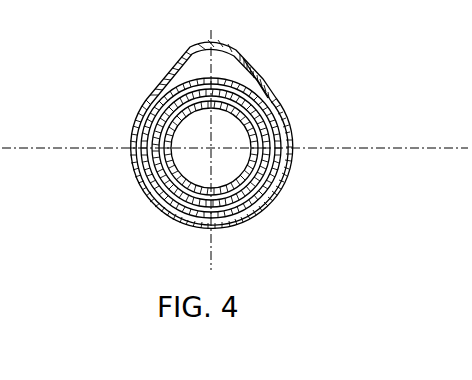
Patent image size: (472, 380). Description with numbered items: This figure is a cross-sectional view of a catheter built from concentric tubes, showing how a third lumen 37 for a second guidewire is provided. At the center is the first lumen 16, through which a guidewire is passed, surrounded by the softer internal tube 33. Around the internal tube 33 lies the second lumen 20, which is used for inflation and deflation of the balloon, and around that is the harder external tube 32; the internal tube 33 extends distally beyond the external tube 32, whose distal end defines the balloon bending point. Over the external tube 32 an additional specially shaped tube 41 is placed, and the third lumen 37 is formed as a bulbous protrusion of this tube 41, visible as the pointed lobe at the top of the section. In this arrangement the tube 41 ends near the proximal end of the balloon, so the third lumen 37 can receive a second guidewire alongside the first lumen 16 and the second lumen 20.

The first lumen 16 is at (190, 168).
The second lumen 20 is at (150, 122).
The external tube 32 is at (287, 171).
The internal tube 33 is at (160, 163).
The third lumen 37 is at (196, 67).
The specially shaped tube 41 is at (257, 70).